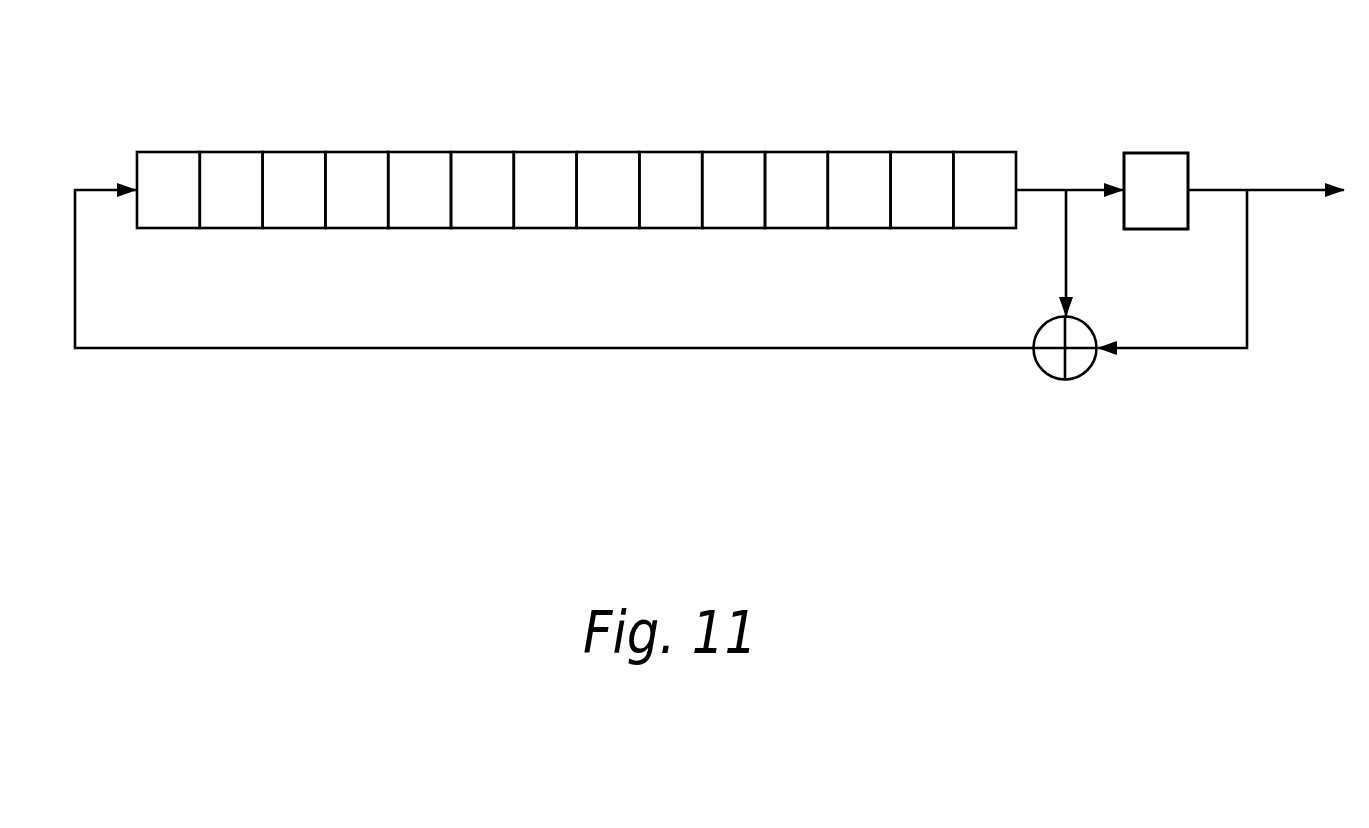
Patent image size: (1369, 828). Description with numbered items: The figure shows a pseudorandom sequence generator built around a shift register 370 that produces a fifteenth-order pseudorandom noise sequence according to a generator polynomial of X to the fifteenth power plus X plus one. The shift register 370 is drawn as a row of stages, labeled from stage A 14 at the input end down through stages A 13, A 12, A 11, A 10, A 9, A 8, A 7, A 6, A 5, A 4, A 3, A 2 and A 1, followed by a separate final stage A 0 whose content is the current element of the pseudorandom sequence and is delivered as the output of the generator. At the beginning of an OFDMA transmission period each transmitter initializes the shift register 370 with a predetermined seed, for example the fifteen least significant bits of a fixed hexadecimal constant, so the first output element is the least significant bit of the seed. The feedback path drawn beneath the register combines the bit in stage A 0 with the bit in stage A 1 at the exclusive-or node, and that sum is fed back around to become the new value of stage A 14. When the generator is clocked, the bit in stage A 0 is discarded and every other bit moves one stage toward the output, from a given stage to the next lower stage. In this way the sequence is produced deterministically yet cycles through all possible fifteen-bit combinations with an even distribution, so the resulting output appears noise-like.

The shift register 370 is at (715, 223).
The shift register stage A14 14 is at (168, 190).
The shift register stage A13 13 is at (231, 190).
The shift register stage A12 12 is at (294, 190).
The shift register stage A11 11 is at (356, 190).
The shift register stage A10 10 is at (419, 190).
The shift register stage A9 9 is at (482, 190).
The shift register stage A8 8 is at (545, 190).
The shift register stage A7 7 is at (608, 190).
The shift register stage A6 6 is at (670, 190).
The shift register stage A5 5 is at (733, 190).
The shift register stage A4 4 is at (796, 190).
The shift register stage A3 3 is at (859, 190).
The shift register stage A2 2 is at (922, 190).
The shift register stage A1 1 is at (984, 190).
The output register stage A0 0 is at (1156, 191).